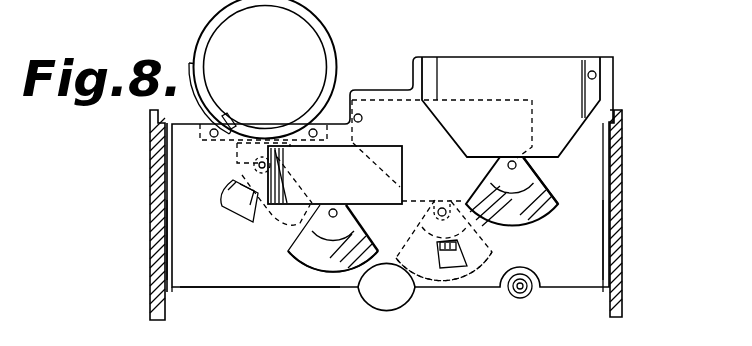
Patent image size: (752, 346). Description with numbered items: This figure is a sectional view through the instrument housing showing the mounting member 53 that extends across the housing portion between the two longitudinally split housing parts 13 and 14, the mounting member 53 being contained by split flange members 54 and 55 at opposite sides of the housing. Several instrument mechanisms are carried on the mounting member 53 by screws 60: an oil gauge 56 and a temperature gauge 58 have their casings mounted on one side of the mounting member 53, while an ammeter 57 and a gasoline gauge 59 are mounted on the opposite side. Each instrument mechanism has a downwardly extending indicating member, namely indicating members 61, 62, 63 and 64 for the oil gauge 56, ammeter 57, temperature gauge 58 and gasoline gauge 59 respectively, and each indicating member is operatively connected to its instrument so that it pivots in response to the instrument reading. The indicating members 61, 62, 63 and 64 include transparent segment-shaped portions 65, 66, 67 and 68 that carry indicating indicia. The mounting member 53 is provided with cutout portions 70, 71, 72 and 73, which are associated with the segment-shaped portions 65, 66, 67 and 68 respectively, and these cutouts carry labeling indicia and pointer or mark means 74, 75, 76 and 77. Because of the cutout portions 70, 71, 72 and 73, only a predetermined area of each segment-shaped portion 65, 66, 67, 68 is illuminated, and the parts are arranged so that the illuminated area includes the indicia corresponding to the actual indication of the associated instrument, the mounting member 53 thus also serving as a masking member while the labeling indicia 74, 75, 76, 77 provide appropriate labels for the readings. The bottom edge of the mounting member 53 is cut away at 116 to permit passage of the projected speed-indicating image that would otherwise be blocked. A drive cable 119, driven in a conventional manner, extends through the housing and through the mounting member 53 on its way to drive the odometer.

The housing part 13 is at (622, 177).
The housing part 14 is at (150, 188).
The mounting member 53 is at (218, 273).
The split flange member 54 is at (605, 258).
The split flange member 55 is at (167, 254).
The oil gauge 56 is at (237, 152).
The ammeter 57 is at (346, 188).
The temperature gauge 58 is at (478, 100).
The gasoline gauge 59 is at (550, 87).
The screws 60 is at (358, 114).
The indicating member 61 is at (242, 175).
The indicating member 62 is at (300, 236).
The indicating member 63 is at (490, 241).
The indicating member 64 is at (524, 170).
The transparent segment-shaped portion 65 is at (250, 228).
The transparent segment-shaped portion 66 is at (350, 266).
The transparent segment-shaped portion 67 is at (472, 258).
The transparent segment-shaped portion 68 is at (480, 198).
The cutout portion 70 is at (240, 206).
The cutout portion 71 is at (308, 262).
The cutout portion 72 is at (440, 268).
The cutout portion 73 is at (558, 210).
The labeling indicia and pointer means 74 is at (232, 192).
The labeling indicia and pointer means 75 is at (356, 232).
The labeling indicia and pointer means 76 is at (455, 268).
The labeling indicia and pointer means 77 is at (532, 181).
The cut away portion 116 is at (384, 262).
The drive cable 119 is at (527, 275).